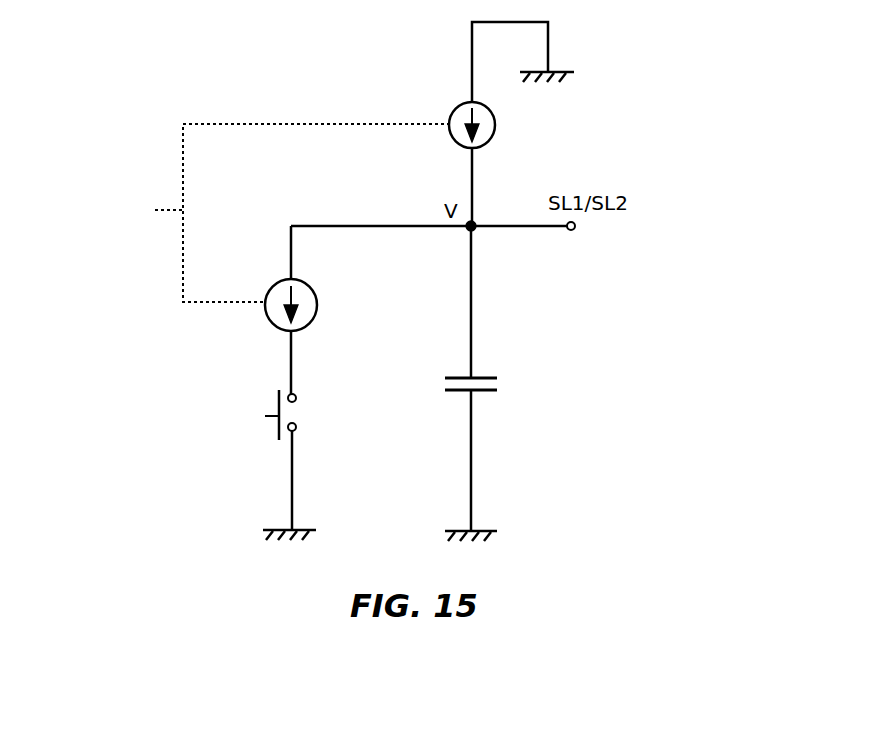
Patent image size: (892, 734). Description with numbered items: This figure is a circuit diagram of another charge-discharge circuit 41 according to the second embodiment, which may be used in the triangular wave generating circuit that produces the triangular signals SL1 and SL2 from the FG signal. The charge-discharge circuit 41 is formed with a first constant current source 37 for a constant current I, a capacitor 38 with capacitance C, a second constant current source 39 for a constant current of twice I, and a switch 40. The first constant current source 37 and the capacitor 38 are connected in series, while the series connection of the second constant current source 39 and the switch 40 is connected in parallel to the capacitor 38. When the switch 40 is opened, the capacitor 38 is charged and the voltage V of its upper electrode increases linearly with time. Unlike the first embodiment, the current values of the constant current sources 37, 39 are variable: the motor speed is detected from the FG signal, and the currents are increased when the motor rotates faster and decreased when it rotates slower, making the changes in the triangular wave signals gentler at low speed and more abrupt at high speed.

The first constant current source 37 is at (485, 108).
The capacitor 38 is at (477, 378).
The second constant current source 39 is at (284, 287).
The switch 40 is at (277, 428).
The charge-discharge circuit 41 is at (300, 90).